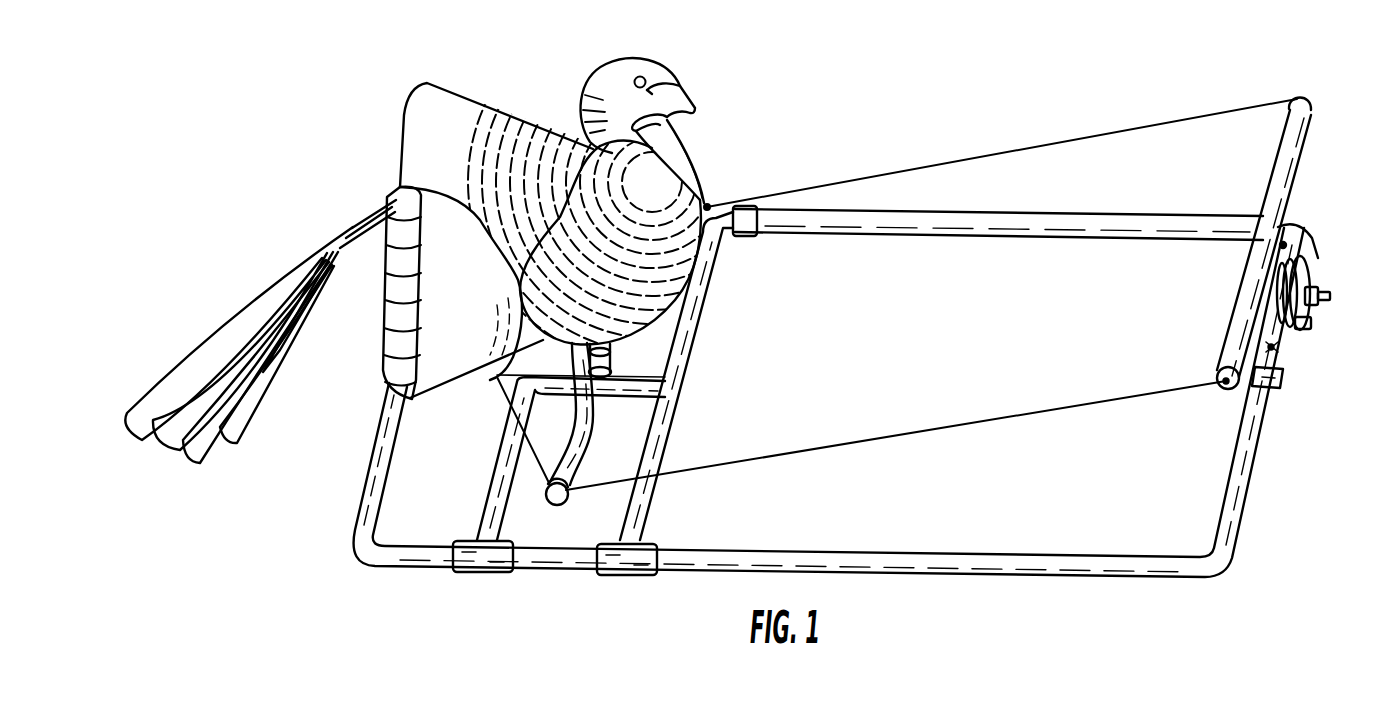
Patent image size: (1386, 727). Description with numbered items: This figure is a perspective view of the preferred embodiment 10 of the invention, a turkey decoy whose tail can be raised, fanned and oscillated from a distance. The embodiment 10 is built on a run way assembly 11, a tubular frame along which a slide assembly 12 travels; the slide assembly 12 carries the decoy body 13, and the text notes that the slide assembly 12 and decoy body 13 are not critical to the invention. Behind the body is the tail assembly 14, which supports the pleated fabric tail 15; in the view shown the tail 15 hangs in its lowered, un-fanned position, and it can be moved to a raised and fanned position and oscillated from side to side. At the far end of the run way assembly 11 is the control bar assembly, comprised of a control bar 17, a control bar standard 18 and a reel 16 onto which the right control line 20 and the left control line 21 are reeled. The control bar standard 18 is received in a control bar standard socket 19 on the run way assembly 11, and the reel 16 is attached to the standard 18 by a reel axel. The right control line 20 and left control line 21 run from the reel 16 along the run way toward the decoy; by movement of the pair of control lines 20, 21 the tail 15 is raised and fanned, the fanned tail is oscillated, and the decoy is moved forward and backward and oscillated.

The preferred embodiment 10 is at (880, 78).
The run way assembly 11 is at (1172, 216).
The slide assembly 12 is at (663, 408).
The decoy body 13 is at (500, 120).
The tail assembly 14 is at (378, 205).
The pleated fabric tail 15 is at (282, 278).
The reel 16 is at (1305, 277).
The control bar 17 is at (1250, 277).
The control bar standard 18 is at (1272, 348).
The control bar standard socket 19 is at (1277, 383).
The right control line 20 is at (1025, 150).
The left control line 21 is at (988, 415).